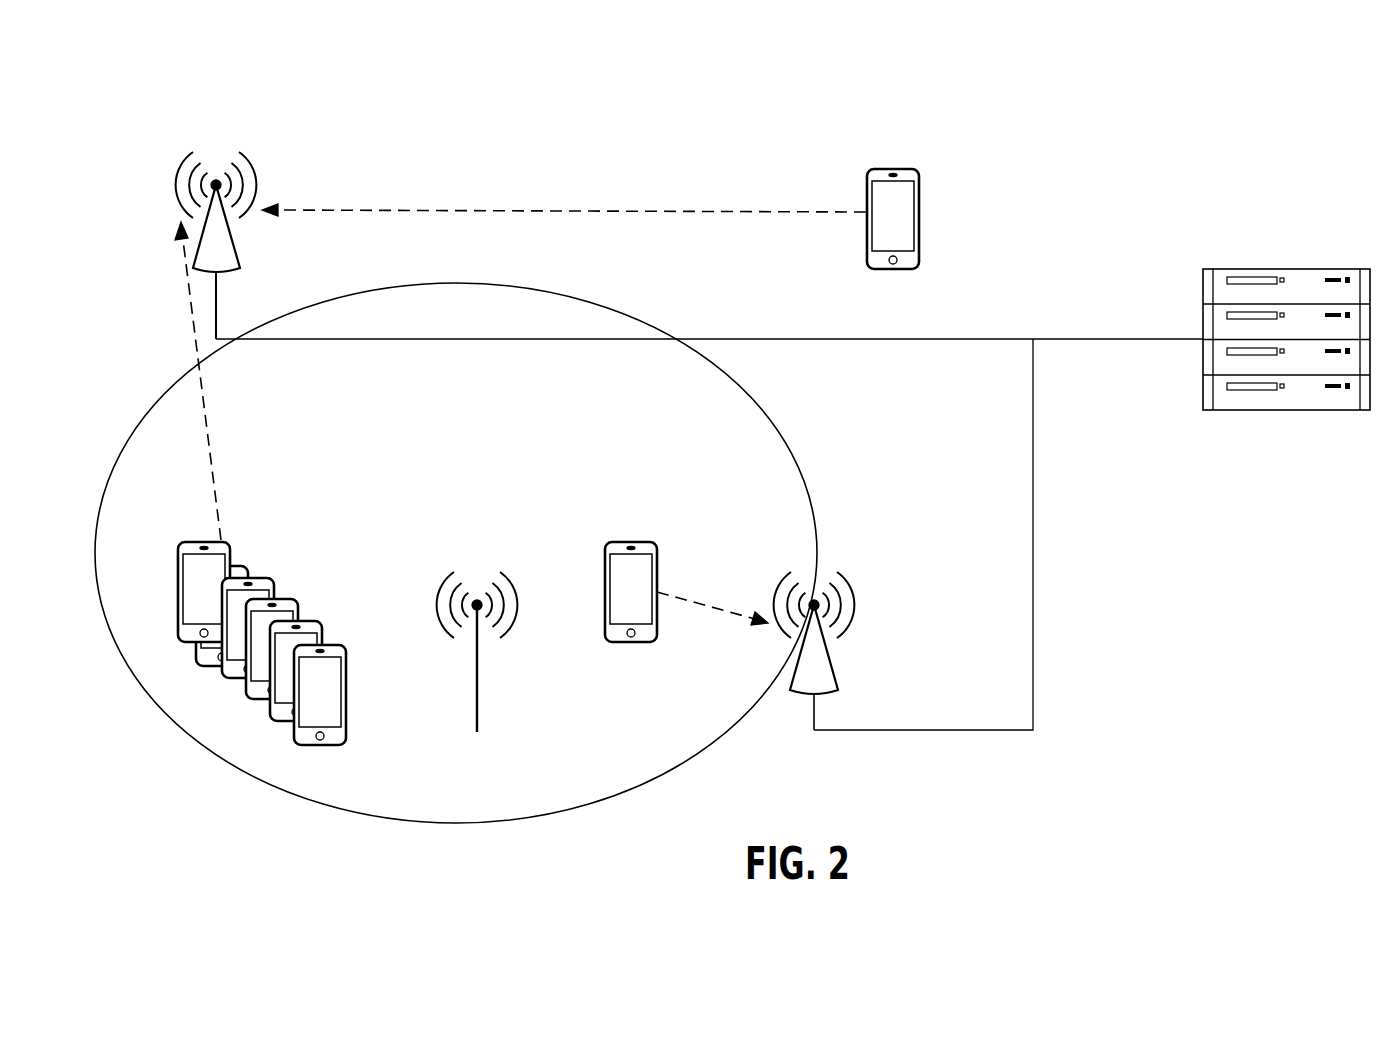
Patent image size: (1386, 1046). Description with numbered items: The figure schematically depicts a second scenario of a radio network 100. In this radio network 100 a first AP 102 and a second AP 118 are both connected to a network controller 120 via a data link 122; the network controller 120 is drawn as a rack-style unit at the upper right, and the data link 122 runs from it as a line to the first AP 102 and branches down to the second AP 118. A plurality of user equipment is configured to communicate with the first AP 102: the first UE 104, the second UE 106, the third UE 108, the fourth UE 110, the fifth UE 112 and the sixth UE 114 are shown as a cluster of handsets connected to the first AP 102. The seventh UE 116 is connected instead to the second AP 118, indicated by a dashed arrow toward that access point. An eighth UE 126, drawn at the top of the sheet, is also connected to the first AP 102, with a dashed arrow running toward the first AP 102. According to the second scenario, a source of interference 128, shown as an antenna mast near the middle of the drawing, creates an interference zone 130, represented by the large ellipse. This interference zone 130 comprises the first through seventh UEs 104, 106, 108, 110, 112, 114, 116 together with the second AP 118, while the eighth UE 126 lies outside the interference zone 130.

The radio network 100 is at (732, 151).
The first AP 102 is at (230, 243).
The first UE 104 is at (195, 556).
The second UE 106 is at (238, 566).
The third UE 108 is at (256, 589).
The fourth UE 110 is at (288, 611).
The fifth UE 112 is at (308, 637).
The sixth UE 114 is at (329, 711).
The seventh UE 116 is at (629, 556).
The second AP 118 is at (818, 670).
The network controller 120 is at (1297, 268).
The data link 122 is at (1103, 337).
The eighth UE 126 is at (905, 211).
The source of interference 128 is at (480, 692).
The interference zone 130 is at (764, 419).